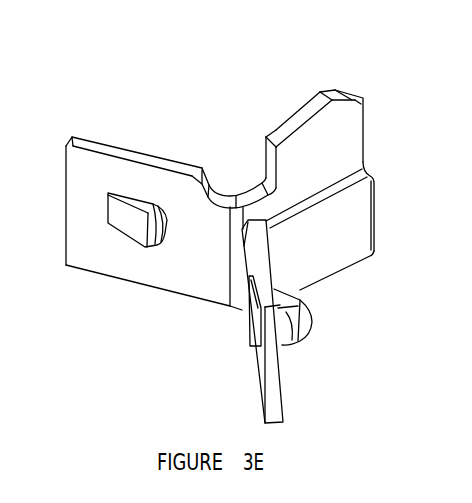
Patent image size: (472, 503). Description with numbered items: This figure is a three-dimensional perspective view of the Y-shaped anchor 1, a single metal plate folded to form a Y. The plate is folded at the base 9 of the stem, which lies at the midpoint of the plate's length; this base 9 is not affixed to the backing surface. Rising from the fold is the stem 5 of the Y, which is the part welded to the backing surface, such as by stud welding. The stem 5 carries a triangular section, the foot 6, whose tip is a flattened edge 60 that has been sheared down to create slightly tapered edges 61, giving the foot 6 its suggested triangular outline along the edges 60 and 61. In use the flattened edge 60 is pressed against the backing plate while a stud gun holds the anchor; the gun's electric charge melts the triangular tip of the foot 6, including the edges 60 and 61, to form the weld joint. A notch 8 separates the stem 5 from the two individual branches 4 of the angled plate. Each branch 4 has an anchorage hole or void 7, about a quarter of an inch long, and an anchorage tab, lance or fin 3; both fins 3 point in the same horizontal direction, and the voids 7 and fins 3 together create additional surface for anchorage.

The Y-shaped anchor 1 is at (147, 108).
The anchorage fin 3 is at (122, 217).
The branch 4 is at (244, 327).
The stem 5 is at (377, 198).
The foot 6 is at (329, 133).
The anchorage void 7 is at (167, 220).
The notch 8 is at (237, 194).
The base of the stem 9 is at (375, 253).
The flattened edge 60 is at (318, 92).
The tapered edges 61 is at (343, 90).